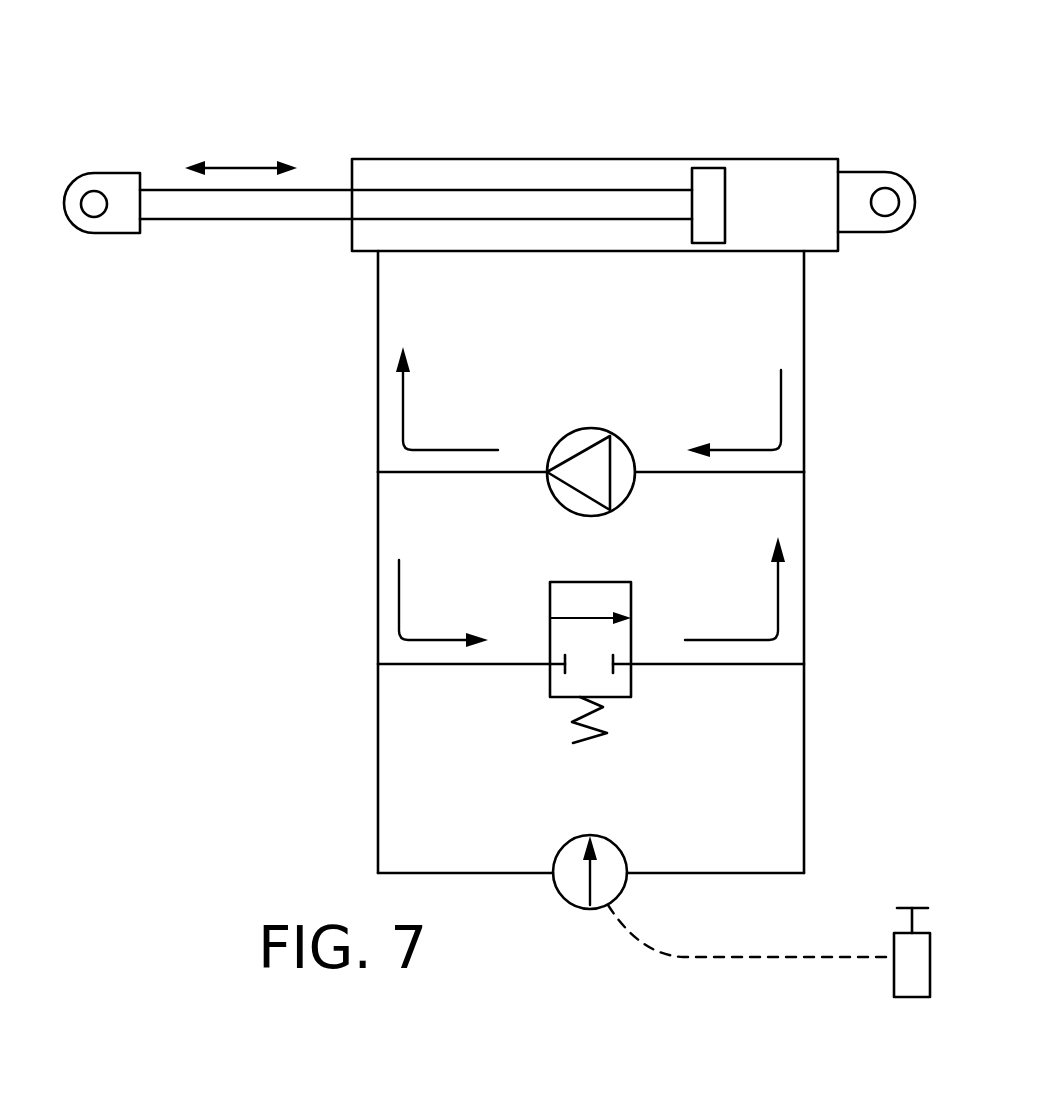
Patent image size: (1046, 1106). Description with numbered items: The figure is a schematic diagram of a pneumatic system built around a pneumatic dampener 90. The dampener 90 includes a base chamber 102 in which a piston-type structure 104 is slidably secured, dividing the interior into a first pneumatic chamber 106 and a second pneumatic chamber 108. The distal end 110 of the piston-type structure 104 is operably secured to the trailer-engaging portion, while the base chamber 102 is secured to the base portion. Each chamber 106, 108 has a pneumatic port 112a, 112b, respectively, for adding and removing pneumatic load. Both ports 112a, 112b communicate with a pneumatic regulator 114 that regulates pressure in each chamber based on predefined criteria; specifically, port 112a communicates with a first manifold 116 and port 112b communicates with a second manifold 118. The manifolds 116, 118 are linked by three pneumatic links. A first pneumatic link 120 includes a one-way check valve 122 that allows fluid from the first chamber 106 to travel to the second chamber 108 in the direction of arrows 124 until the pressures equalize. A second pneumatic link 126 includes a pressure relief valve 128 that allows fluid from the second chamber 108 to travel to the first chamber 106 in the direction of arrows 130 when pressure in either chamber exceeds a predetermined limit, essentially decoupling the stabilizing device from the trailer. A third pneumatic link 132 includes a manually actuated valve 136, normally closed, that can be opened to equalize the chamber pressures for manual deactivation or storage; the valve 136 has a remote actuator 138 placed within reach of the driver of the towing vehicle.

The pneumatic dampener 90 is at (535, 95).
The base chamber 102 is at (656, 158).
The piston-type structure 104 is at (305, 194).
The first pneumatic chamber 106 is at (787, 187).
The second pneumatic chamber 108 is at (453, 172).
The distal end 110 is at (73, 230).
The pneumatic port 112a is at (805, 255).
The pneumatic port 112b is at (377, 253).
The pneumatic regulator 114 is at (330, 640).
The first manifold 116 is at (805, 518).
The second manifold 118 is at (377, 525).
The first pneumatic link 120 is at (518, 472).
The one-way check valve 122 is at (625, 438).
The arrows 124 is at (450, 450).
The second pneumatic link 126 is at (488, 665).
The pressure relief valve 128 is at (633, 677).
The arrows 130 is at (399, 617).
The third pneumatic link 132 is at (460, 872).
The manually actuated valve 136 is at (622, 853).
The remote actuator 138 is at (894, 988).